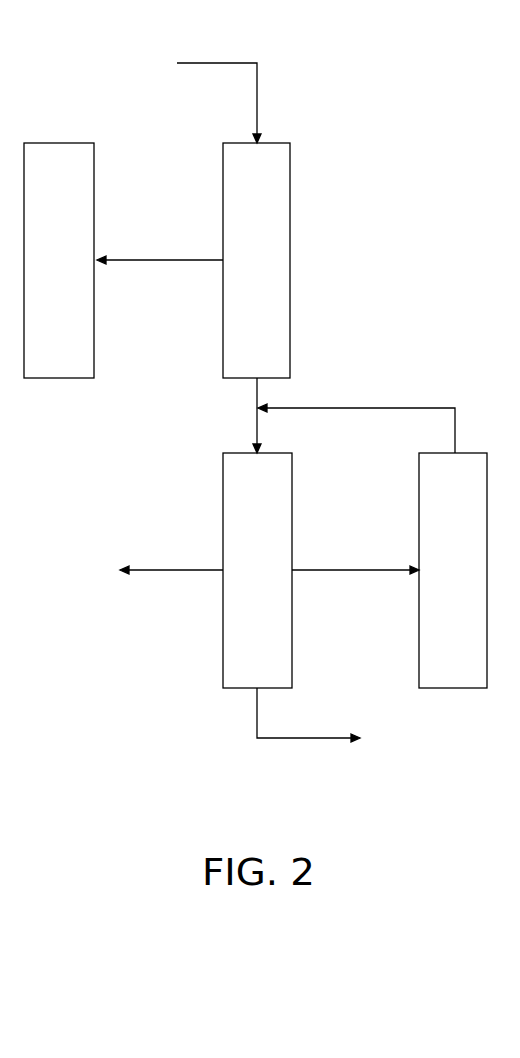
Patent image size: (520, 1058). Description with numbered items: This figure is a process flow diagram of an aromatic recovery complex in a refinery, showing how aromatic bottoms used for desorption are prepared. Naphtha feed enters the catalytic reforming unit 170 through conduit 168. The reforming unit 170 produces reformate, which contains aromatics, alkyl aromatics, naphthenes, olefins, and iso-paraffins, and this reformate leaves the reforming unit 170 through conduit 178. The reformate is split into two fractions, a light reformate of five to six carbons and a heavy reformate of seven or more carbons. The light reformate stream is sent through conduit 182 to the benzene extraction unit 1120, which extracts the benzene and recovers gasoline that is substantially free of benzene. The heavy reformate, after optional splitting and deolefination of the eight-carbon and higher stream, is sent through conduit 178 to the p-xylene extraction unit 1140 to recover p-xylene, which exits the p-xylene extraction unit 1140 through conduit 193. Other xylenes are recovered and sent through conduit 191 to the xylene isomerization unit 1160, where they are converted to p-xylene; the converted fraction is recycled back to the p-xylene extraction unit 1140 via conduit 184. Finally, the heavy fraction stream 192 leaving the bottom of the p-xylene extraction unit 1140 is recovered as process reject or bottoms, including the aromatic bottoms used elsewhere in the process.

The conduit 168 is at (213, 63).
The catalytic reforming unit 170 is at (235, 272).
The conduit 182 is at (170, 260).
The benzene extraction unit 1120 is at (87, 272).
The conduit 178 is at (255, 418).
The conduit 184 is at (355, 408).
The p-xylene extraction unit 1140 is at (285, 585).
The xylene isomerization unit 1160 is at (482, 585).
The conduit 191 is at (340, 570).
The conduit 193 is at (170, 570).
The heavy fraction stream 192 is at (313, 738).